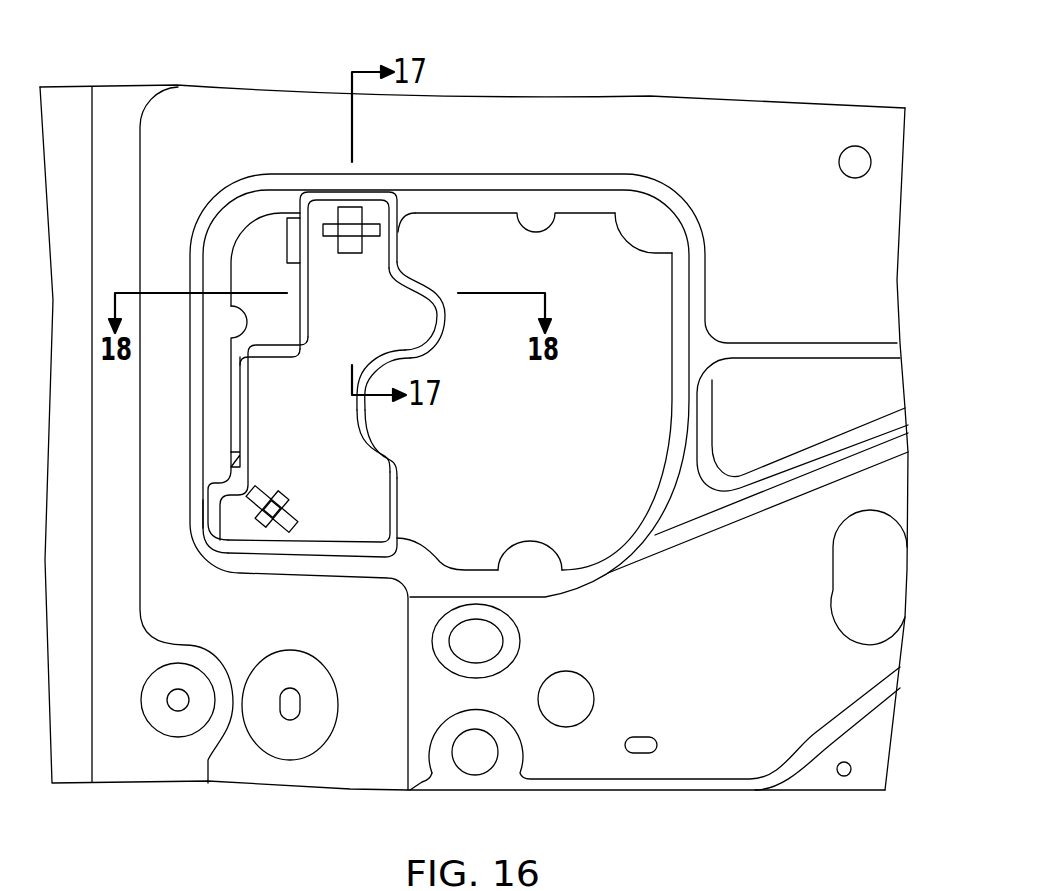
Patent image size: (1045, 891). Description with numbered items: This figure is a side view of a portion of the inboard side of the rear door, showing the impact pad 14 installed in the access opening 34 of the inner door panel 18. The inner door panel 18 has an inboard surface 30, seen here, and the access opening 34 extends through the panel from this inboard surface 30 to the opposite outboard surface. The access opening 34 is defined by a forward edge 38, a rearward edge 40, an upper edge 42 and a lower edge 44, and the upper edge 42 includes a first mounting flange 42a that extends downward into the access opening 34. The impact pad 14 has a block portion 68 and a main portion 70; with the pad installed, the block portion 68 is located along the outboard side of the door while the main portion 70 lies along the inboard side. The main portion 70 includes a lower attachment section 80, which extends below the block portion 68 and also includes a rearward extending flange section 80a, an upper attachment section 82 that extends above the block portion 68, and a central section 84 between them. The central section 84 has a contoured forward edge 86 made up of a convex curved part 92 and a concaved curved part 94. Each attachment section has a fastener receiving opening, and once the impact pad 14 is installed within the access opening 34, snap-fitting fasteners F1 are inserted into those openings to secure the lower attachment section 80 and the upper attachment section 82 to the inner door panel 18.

The impact pad 14 is at (440, 277).
The inner door panel 18 is at (759, 92).
The inboard surface 30 is at (667, 135).
The access opening 34 is at (513, 213).
The forward edge 38 is at (670, 392).
The rearward edge 40 is at (245, 334).
The upper edge 42 is at (660, 247).
The first mounting flange 42a is at (403, 214).
The lower edge 44 is at (560, 570).
The block portion 68 is at (263, 258).
The main portion 70 is at (287, 415).
The lower attachment section 80 is at (338, 518).
The rearward extending flange section 80a is at (242, 517).
The upper attachment section 82 is at (325, 210).
The central section 84 is at (377, 323).
The contoured forward edge 86 is at (447, 313).
The convex curved part 92 is at (443, 332).
The concaved curved part 94 is at (372, 435).
The snap-fitting fastener F1 is at (350, 240).